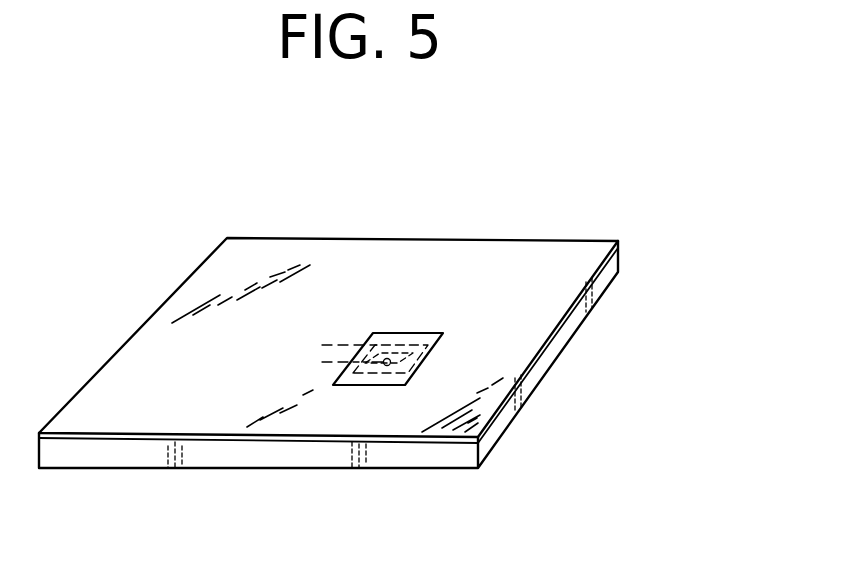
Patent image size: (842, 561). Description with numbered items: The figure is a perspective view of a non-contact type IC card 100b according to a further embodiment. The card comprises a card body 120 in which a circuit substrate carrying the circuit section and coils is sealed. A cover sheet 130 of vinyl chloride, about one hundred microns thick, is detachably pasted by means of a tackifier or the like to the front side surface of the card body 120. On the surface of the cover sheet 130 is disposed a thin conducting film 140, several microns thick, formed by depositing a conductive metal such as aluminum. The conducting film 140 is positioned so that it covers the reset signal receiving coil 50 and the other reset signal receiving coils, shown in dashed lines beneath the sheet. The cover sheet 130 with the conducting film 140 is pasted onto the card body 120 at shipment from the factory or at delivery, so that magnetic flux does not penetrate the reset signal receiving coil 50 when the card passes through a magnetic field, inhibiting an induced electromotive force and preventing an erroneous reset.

The non-contact type IC card 100b is at (405, 353).
The card body 120 is at (490, 444).
The cover sheet 130 is at (500, 413).
The thin conducting film 140 is at (443, 333).
The reset signal receiving coil 50 is at (417, 358).